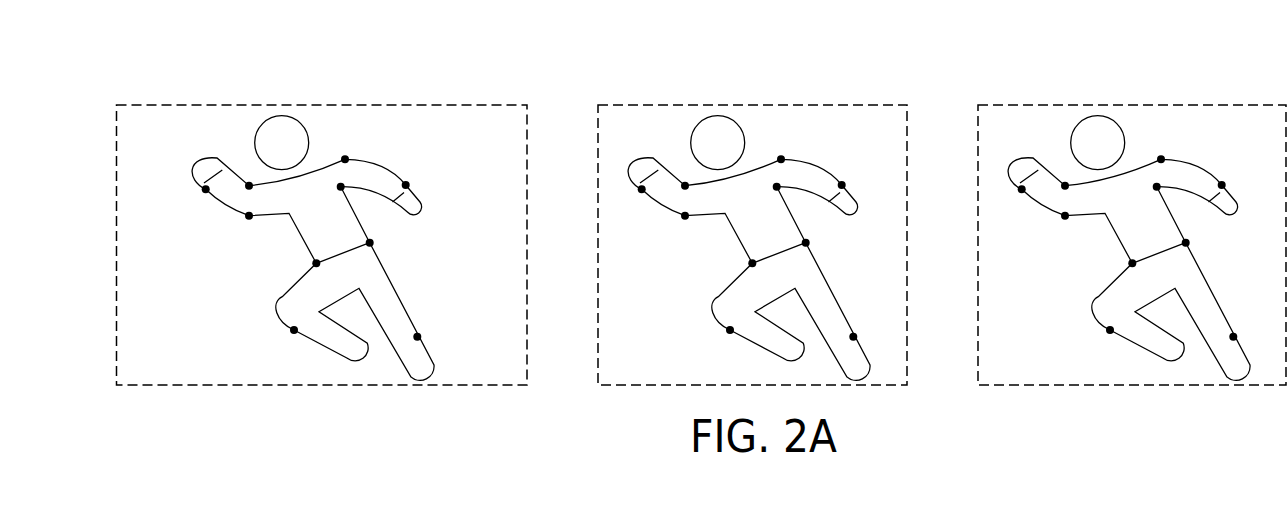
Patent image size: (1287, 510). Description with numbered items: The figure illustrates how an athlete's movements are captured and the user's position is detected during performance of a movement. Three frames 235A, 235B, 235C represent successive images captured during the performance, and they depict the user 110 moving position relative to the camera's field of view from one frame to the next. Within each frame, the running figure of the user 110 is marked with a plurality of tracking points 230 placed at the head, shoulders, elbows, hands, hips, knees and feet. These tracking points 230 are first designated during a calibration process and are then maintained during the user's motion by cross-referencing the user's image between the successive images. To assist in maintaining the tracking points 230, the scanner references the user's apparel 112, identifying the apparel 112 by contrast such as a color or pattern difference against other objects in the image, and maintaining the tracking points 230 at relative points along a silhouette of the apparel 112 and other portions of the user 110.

The user 110 is at (283, 248).
The apparel 112 is at (297, 233).
The tracking points 230 is at (405, 184).
The frame 235A is at (332, 104).
The frame 235B is at (747, 104).
The frame 235C is at (1127, 104).